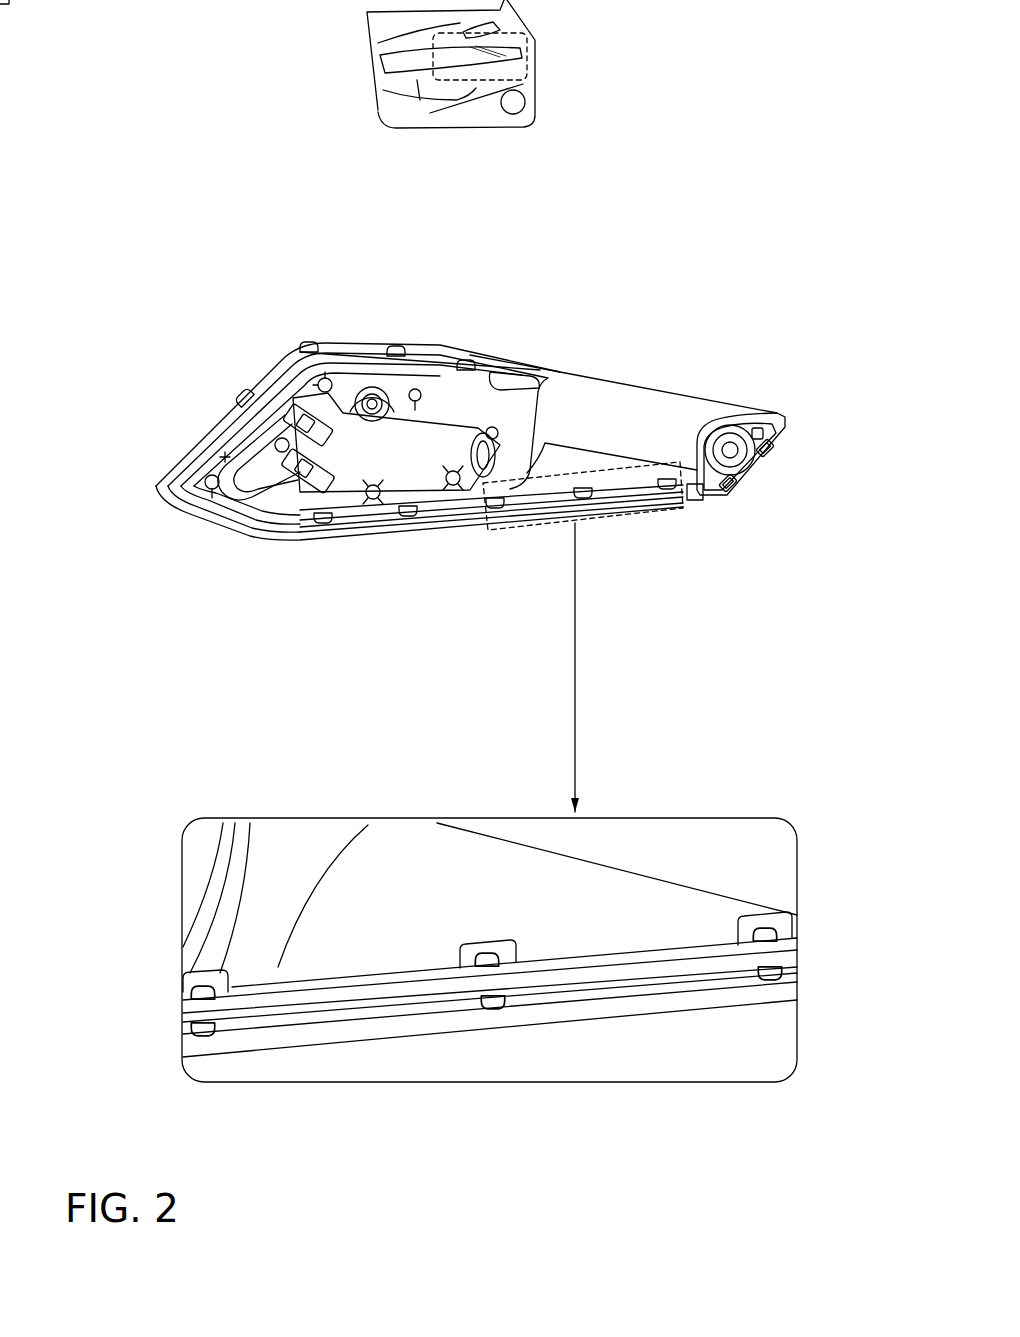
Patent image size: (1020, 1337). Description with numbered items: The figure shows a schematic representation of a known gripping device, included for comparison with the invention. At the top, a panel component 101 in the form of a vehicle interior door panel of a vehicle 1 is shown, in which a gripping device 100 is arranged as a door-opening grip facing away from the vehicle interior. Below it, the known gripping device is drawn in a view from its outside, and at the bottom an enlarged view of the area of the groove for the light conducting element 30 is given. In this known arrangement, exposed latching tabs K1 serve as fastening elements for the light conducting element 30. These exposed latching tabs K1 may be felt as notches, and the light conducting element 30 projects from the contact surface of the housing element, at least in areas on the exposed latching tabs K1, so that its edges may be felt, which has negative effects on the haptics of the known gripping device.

The vehicle 1 is at (568, 126).
The gripping device 100 is at (490, 60).
The panel component 101 is at (388, 27).
The light conducting element 30 is at (457, 513).
The exposed latching tabs K1 is at (256, 382).